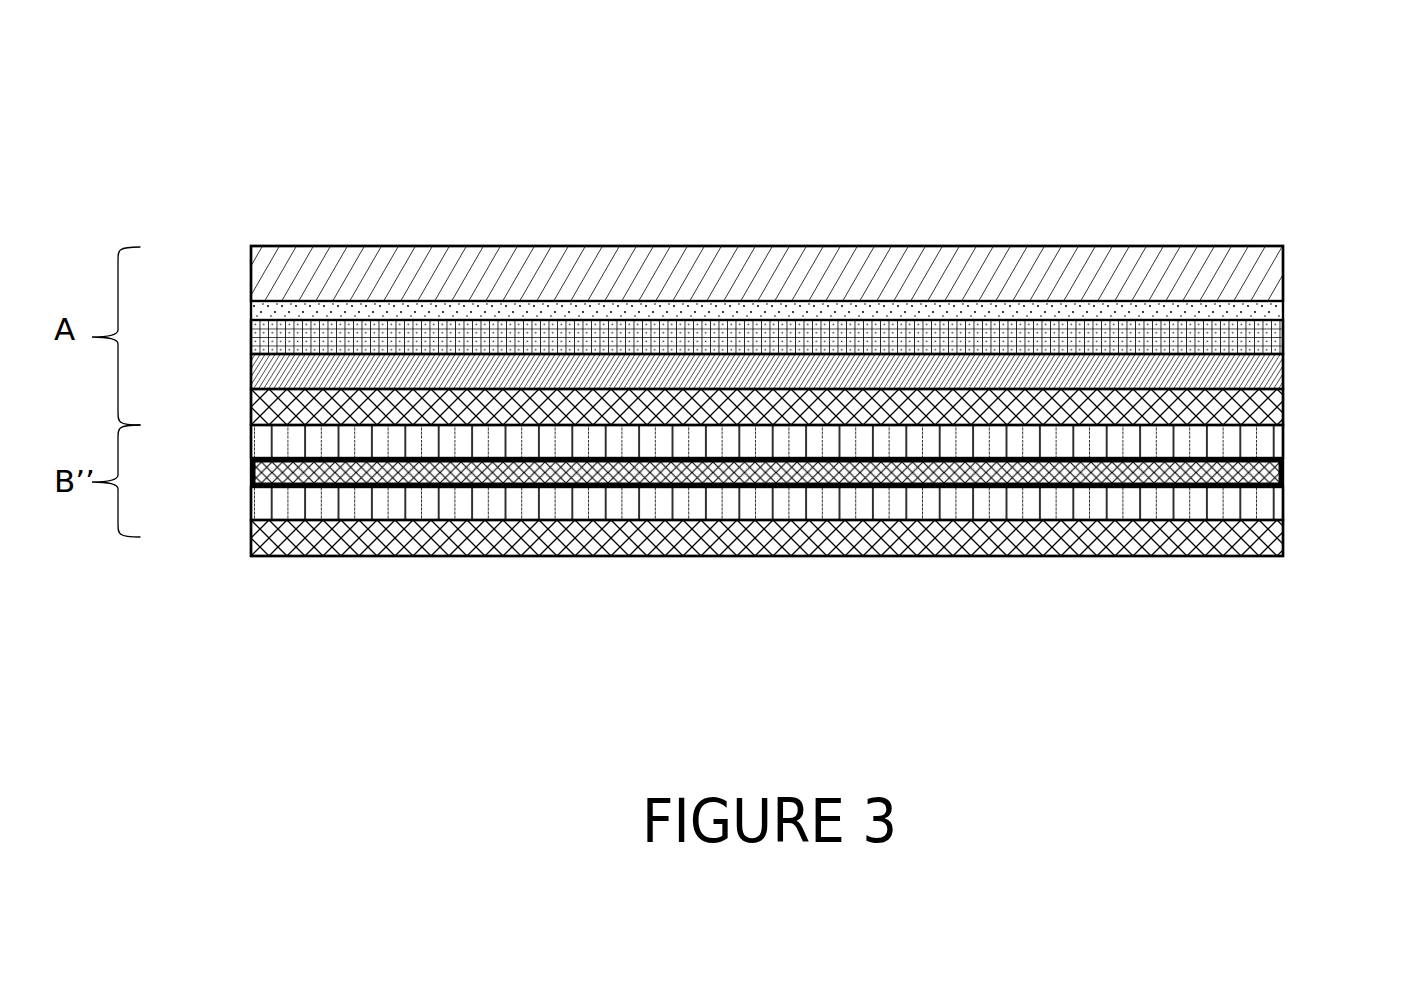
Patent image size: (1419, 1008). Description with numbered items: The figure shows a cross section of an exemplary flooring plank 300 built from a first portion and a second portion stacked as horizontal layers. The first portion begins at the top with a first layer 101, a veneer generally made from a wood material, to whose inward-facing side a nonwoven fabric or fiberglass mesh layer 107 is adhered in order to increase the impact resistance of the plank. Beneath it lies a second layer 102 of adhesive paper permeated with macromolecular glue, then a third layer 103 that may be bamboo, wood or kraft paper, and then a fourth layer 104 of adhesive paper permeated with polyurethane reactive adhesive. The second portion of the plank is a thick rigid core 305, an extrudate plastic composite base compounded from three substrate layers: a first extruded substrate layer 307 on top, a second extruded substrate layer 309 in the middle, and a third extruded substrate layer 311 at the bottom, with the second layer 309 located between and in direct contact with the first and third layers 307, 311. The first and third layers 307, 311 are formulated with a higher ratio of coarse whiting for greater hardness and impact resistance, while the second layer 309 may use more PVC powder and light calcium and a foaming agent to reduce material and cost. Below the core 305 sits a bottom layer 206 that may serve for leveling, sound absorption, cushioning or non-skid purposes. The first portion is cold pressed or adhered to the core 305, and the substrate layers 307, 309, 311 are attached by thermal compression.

The plank 300 is at (1185, 203).
The first layer 101 is at (1283, 262).
The nonwoven fabric or fiberglass layer 107 is at (251, 304).
The second layer 102 is at (251, 333).
The third layer 103 is at (1284, 372).
The fourth layer 104 is at (251, 397).
The rigid core 305 is at (834, 571).
The first extruded substrate layer 307 is at (755, 445).
The second extruded substrate layer 309 is at (837, 477).
The third extruded substrate layer 311 is at (923, 508).
The substrate layer 206 is at (251, 525).